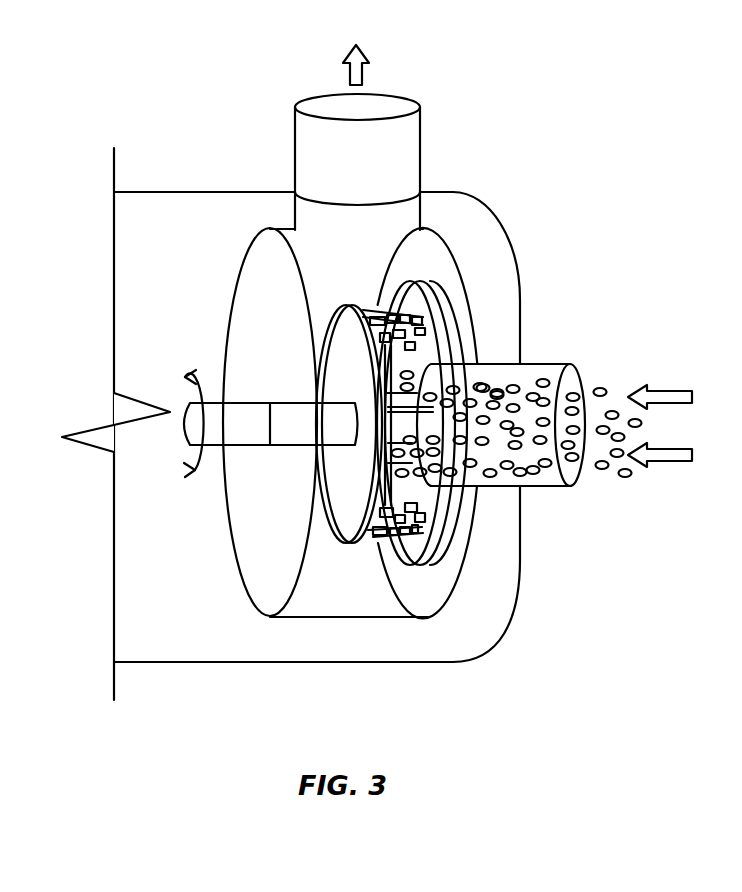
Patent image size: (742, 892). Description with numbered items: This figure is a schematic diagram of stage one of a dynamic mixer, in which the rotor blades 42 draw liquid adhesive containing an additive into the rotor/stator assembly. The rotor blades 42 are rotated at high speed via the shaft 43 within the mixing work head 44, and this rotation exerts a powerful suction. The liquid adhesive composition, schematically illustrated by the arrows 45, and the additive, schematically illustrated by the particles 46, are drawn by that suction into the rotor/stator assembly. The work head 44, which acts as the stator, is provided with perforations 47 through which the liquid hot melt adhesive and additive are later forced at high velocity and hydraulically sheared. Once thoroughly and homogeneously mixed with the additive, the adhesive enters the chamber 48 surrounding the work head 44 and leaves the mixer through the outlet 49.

The rotor blades 42 is at (390, 362).
The shaft 43 is at (252, 450).
The mixing work head 44 is at (415, 282).
The arrows 45 is at (673, 389).
The particles 46 is at (577, 390).
The perforations 47 is at (427, 330).
The chamber 48 is at (272, 547).
The outlet 49 is at (293, 147).